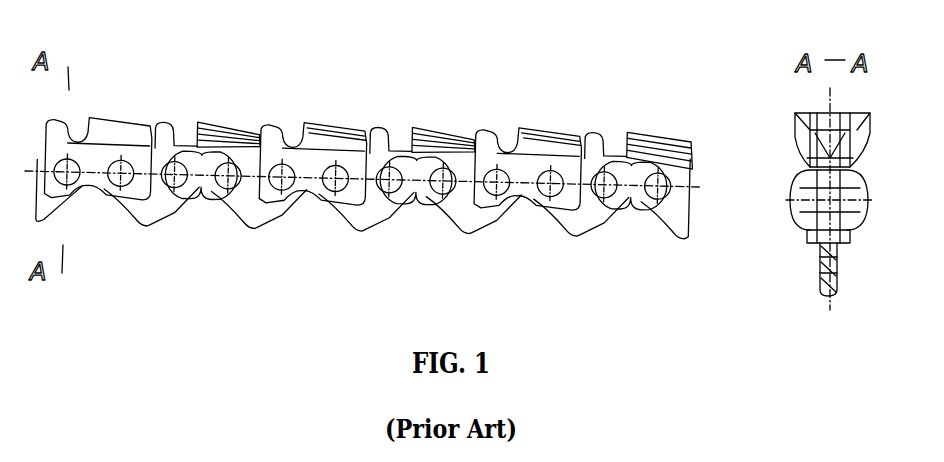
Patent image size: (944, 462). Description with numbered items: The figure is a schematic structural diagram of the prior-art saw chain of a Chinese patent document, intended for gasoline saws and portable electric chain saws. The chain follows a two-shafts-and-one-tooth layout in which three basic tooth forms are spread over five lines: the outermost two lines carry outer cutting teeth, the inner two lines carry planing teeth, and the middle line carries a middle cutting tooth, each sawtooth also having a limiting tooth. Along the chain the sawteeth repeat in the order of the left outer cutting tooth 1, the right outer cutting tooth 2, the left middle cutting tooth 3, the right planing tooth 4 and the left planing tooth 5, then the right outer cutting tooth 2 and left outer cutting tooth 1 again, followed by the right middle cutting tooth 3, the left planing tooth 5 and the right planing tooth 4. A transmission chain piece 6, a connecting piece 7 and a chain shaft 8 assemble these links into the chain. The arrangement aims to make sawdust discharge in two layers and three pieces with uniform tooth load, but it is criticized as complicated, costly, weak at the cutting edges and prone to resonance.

The left outer cutting tooth 1 is at (102, 130).
The right outer cutting tooth 2 is at (227, 122).
The middle cutting tooth 3 is at (338, 121).
The right planing tooth 4 is at (444, 125).
The left planing tooth 5 is at (543, 142).
The transmission chain piece 6 is at (610, 157).
The connecting piece 7 is at (640, 165).
The chain shaft 8 is at (690, 143).